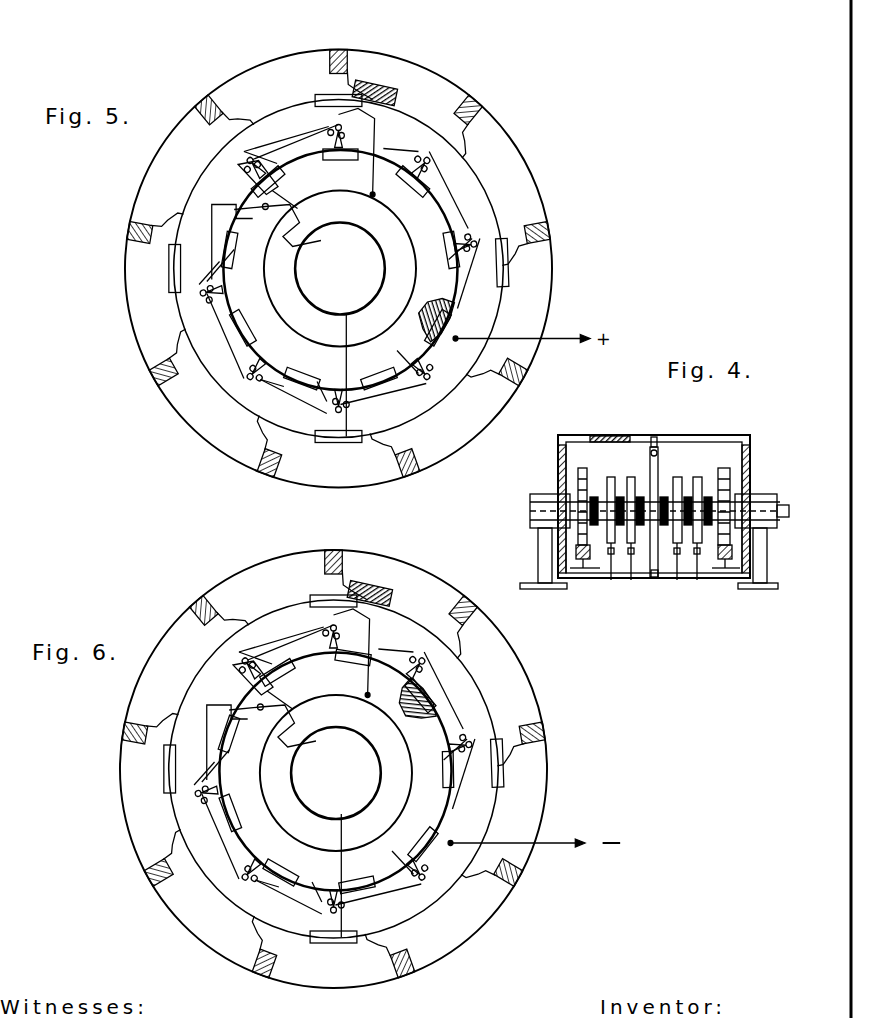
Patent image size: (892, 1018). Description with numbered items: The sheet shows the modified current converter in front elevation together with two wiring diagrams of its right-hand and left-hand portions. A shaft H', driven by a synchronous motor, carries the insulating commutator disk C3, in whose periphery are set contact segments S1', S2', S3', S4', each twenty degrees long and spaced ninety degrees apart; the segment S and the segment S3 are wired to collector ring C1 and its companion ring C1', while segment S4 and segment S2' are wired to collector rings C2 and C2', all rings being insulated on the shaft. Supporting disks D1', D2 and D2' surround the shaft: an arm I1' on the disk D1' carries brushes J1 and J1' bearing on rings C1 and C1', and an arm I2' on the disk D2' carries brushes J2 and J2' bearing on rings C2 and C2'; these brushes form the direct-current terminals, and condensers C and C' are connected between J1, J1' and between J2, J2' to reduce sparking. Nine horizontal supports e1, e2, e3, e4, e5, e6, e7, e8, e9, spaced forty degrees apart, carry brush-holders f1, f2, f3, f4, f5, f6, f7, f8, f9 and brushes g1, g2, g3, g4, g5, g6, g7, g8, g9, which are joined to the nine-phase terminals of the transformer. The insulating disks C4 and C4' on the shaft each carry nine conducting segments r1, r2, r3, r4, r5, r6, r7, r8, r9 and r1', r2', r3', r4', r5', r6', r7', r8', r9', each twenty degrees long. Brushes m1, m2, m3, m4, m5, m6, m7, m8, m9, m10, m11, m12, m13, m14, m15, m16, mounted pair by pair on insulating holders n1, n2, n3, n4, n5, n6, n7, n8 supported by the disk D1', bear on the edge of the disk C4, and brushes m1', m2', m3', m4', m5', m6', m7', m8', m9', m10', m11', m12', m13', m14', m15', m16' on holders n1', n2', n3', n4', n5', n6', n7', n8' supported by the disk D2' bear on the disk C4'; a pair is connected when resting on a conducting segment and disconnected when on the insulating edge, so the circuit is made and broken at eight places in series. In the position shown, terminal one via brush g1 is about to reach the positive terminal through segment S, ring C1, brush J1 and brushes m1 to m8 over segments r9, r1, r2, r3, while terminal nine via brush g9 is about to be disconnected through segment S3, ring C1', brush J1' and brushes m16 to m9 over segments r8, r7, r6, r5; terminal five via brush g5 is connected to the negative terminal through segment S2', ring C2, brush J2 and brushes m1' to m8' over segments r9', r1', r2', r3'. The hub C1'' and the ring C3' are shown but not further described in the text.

In FIG. 5, the stator ring D1' is at (338, 265).
In FIG. 6, the stator ring D1' is at (203, 989).
In FIG. 4, the stator ring D1' is at (764, 445).
In FIG. 6, the stator ring D2 is at (342, 769).
In FIG. 4, the frame D2' is at (642, 506).
In FIG. 5, the commutator segment C1' is at (433, 312).
In FIG. 6, the commutator segment C1' is at (416, 703).
In FIG. 4, the commutator segment C1' is at (588, 496).
In FIG. 5, the shaft hub C1'' is at (340, 269).
In FIG. 6, the shaft hub C2' is at (336, 773).
In FIG. 4, the shaft hub C2' is at (614, 495).
In FIG. 6, the hub ring C2 is at (336, 773).
In FIG. 4, the hub ring C2 is at (635, 499).
In FIG. 5, the intermediate ring C3' is at (368, 269).
In FIG. 6, the intermediate ring C3' is at (354, 769).
In FIG. 5, the rotor rim C4' is at (400, 270).
In FIG. 6, the rotor rim C4' is at (391, 772).
In FIG. 4, the disk C1 is at (682, 495).
In FIG. 4, the disk C3 is at (640, 591).
In FIG. 4, the disk C4 is at (714, 496).
In FIG. 5, the switch C is at (277, 225).
In FIG. 6, the switch C' is at (272, 725).
In FIG. 4, the central disk S is at (660, 512).
In FIG. 5, the electromagnet e1 is at (340, 50).
In FIG. 6, the electromagnet e1 is at (334, 543).
In FIG. 4, the electromagnet e1 is at (659, 432).
In FIG. 5, the electromagnet e2 is at (266, 478).
In FIG. 6, the electromagnet e2 is at (263, 976).
In FIG. 5, the electromagnet e3 is at (480, 108).
In FIG. 6, the electromagnet e3 is at (472, 603).
In FIG. 5, the electromagnet e4 is at (152, 380).
In FIG. 6, the electromagnet e4 is at (146, 879).
In FIG. 5, the electromagnet e5 is at (553, 234).
In FIG. 6, the electromagnet e5 is at (544, 735).
In FIG. 5, the electromagnet e6 is at (126, 230).
In FIG. 6, the electromagnet e6 is at (122, 732).
In FIG. 5, the electromagnet e7 is at (518, 374).
In FIG. 6, the electromagnet e7 is at (513, 877).
In FIG. 5, the electromagnet e8 is at (206, 106).
In FIG. 6, the electromagnet e8 is at (200, 602).
In FIG. 5, the electromagnet e9 is at (413, 472).
In FIG. 6, the electromagnet e9 is at (408, 972).
In FIG. 5, the conductor f1 is at (359, 81).
In FIG. 6, the conductor f1 is at (354, 582).
In FIG. 5, the conductor f2 is at (258, 452).
In FIG. 6, the conductor f2 is at (249, 938).
In FIG. 5, the conductor f3 is at (465, 137).
In FIG. 6, the conductor f3 is at (460, 638).
In FIG. 5, the conductor f4 is at (172, 344).
In FIG. 6, the conductor f4 is at (164, 844).
In FIG. 5, the conductor f5 is at (540, 248).
In FIG. 6, the conductor f5 is at (511, 755).
In FIG. 5, the conductor f6 is at (157, 220).
In FIG. 6, the conductor f6 is at (159, 709).
In FIG. 5, the conductor f7 is at (492, 389).
In FIG. 6, the conductor f7 is at (478, 880).
In FIG. 5, the conductor f8 is at (232, 106).
In FIG. 6, the conductor f8 is at (233, 605).
In FIG. 5, the conductor f9 is at (383, 451).
In FIG. 6, the conductor f9 is at (382, 945).
In FIG. 5, the contact g1 is at (374, 88).
In FIG. 6, the contact g1 is at (369, 589).
In FIG. 4, the contact g1 is at (660, 450).
In FIG. 5, the contact g2 is at (255, 426).
In FIG. 6, the contact g2 is at (234, 925).
In FIG. 5, the contact g3 is at (470, 154).
In FIG. 6, the contact g3 is at (475, 653).
In FIG. 5, the contact g4 is at (180, 338).
In FIG. 6, the contact g4 is at (160, 825).
In FIG. 5, the contact g5 is at (520, 258).
In FIG. 6, the contact g5 is at (508, 777).
In FIG. 5, the contact g6 is at (178, 195).
In FIG. 6, the contact g6 is at (173, 687).
In FIG. 5, the contact g7 is at (484, 392).
In FIG. 6, the contact g7 is at (455, 911).
In FIG. 5, the contact g8 is at (246, 120).
In FIG. 6, the contact g8 is at (251, 603).
In FIG. 5, the contact g9 is at (363, 447).
In FIG. 6, the contact g9 is at (397, 929).
In FIG. 5, the contact segment S1' is at (326, 92).
In FIG. 6, the contact segment S1' is at (321, 593).
In FIG. 5, the contact segment S2' is at (513, 266).
In FIG. 6, the contact segment S2' is at (527, 770).
In FIG. 5, the contact segment S3' is at (338, 449).
In FIG. 6, the contact segment S3' is at (333, 949).
In FIG. 5, the contact segment S4' is at (160, 269).
In FIG. 6, the contact segment S4' is at (131, 770).
In FIG. 4, the brush S3 is at (661, 563).
In FIG. 4, the brush S4 is at (668, 558).
In FIG. 5, the contact block r1 is at (340, 170).
In FIG. 5, the contact block r2 is at (412, 186).
In FIG. 5, the contact block r3 is at (440, 249).
In FIG. 5, the contact block r4 is at (438, 327).
In FIG. 5, the contact block r5 is at (379, 369).
In FIG. 4, the contact block r5 is at (712, 481).
In FIG. 5, the contact block r6 is at (302, 360).
In FIG. 4, the contact block r6 is at (650, 557).
In FIG. 5, the contact block r7 is at (247, 327).
In FIG. 5, the contact block r8 is at (236, 249).
In FIG. 5, the contact block r9 is at (277, 179).
In FIG. 6, the contact block r1' is at (353, 669).
In FIG. 4, the contact block r1' is at (598, 481).
In FIG. 6, the contact block r2' is at (435, 696).
In FIG. 6, the contact block r3' is at (433, 769).
In FIG. 6, the contact block r4' is at (413, 844).
In FIG. 6, the contact block r5' is at (353, 872).
In FIG. 6, the contact block r6' is at (281, 864).
In FIG. 6, the contact block r7' is at (233, 812).
In FIG. 6, the contact block r8' is at (234, 734).
In FIG. 6, the contact block r9' is at (289, 673).
In FIG. 5, the pivot n1 is at (241, 170).
In FIG. 5, the pivot n2 is at (318, 131).
In FIG. 5, the pivot n3 is at (419, 154).
In FIG. 5, the pivot n4 is at (471, 226).
In FIG. 5, the pivot n5 is at (432, 370).
In FIG. 5, the pivot n6 is at (356, 405).
In FIG. 4, the pivot n6 is at (739, 602).
In FIG. 5, the pivot n7 is at (255, 384).
In FIG. 5, the pivot n8 is at (204, 303).
In FIG. 6, the pivot n1' is at (248, 653).
In FIG. 6, the pivot n2' is at (324, 627).
In FIG. 6, the pivot n3' is at (414, 652).
In FIG. 6, the pivot n4' is at (458, 739).
In FIG. 6, the pivot n5' is at (418, 881).
In FIG. 6, the pivot n6' is at (337, 910).
In FIG. 4, the pivot n6' is at (562, 595).
In FIG. 6, the pivot n7' is at (244, 877).
In FIG. 6, the pivot n8' is at (200, 808).
In FIG. 5, the lever m1 is at (267, 185).
In FIG. 5, the lever m2 is at (273, 160).
In FIG. 5, the lever m3 is at (291, 142).
In FIG. 5, the lever m4 is at (357, 153).
In FIG. 5, the lever m5 is at (400, 150).
In FIG. 5, the lever m6 is at (448, 190).
In FIG. 5, the lever m7 is at (459, 242).
In FIG. 5, the lever m8 is at (474, 274).
In FIG. 5, the lever m9 is at (405, 353).
In FIG. 5, the lever m10 is at (383, 395).
In FIG. 5, the lever m11 is at (334, 382).
In FIG. 4, the lever m11 is at (713, 594).
In FIG. 5, the lever m12 is at (294, 401).
In FIG. 4, the lever m12 is at (753, 551).
In FIG. 5, the lever m13 is at (277, 379).
In FIG. 5, the lever m14 is at (225, 336).
In FIG. 5, the lever m15 is at (235, 278).
In FIG. 5, the lever m16 is at (226, 245).
In FIG. 6, the lever m1' is at (245, 685).
In FIG. 6, the lever m2' is at (268, 641).
In FIG. 6, the lever m3' is at (286, 642).
In FIG. 6, the lever m4' is at (357, 653).
In FIG. 6, the lever m5' is at (395, 653).
In FIG. 6, the lever m6' is at (443, 690).
In FIG. 6, the lever m7' is at (439, 745).
In FIG. 6, the lever m8' is at (471, 763).
In FIG. 6, the lever m9' is at (390, 859).
In FIG. 6, the lever m10' is at (378, 892).
In FIG. 6, the lever m11' is at (321, 882).
In FIG. 4, the lever m11' is at (603, 594).
In FIG. 6, the lever m12' is at (289, 901).
In FIG. 4, the lever m12' is at (546, 555).
In FIG. 6, the lever m13' is at (263, 857).
In FIG. 6, the lever m14' is at (216, 836).
In FIG. 6, the lever m15' is at (230, 770).
In FIG. 6, the lever m16' is at (215, 745).
In FIG. 5, the switch arm J1 is at (301, 202).
In FIG. 4, the switch arm J1 is at (660, 608).
In FIG. 5, the switch arm J1' is at (305, 233).
In FIG. 4, the switch arm J1' is at (710, 615).
In FIG. 6, the switch arm J2 is at (292, 689).
In FIG. 4, the switch arm J2 is at (630, 612).
In FIG. 6, the switch arm J2' is at (311, 717).
In FIG. 4, the switch arm J2' is at (613, 608).
In FIG. 4, the shaft H' is at (641, 541).
In FIG. 4, the insulation I1' is at (689, 627).
In FIG. 4, the insulation I2' is at (575, 606).